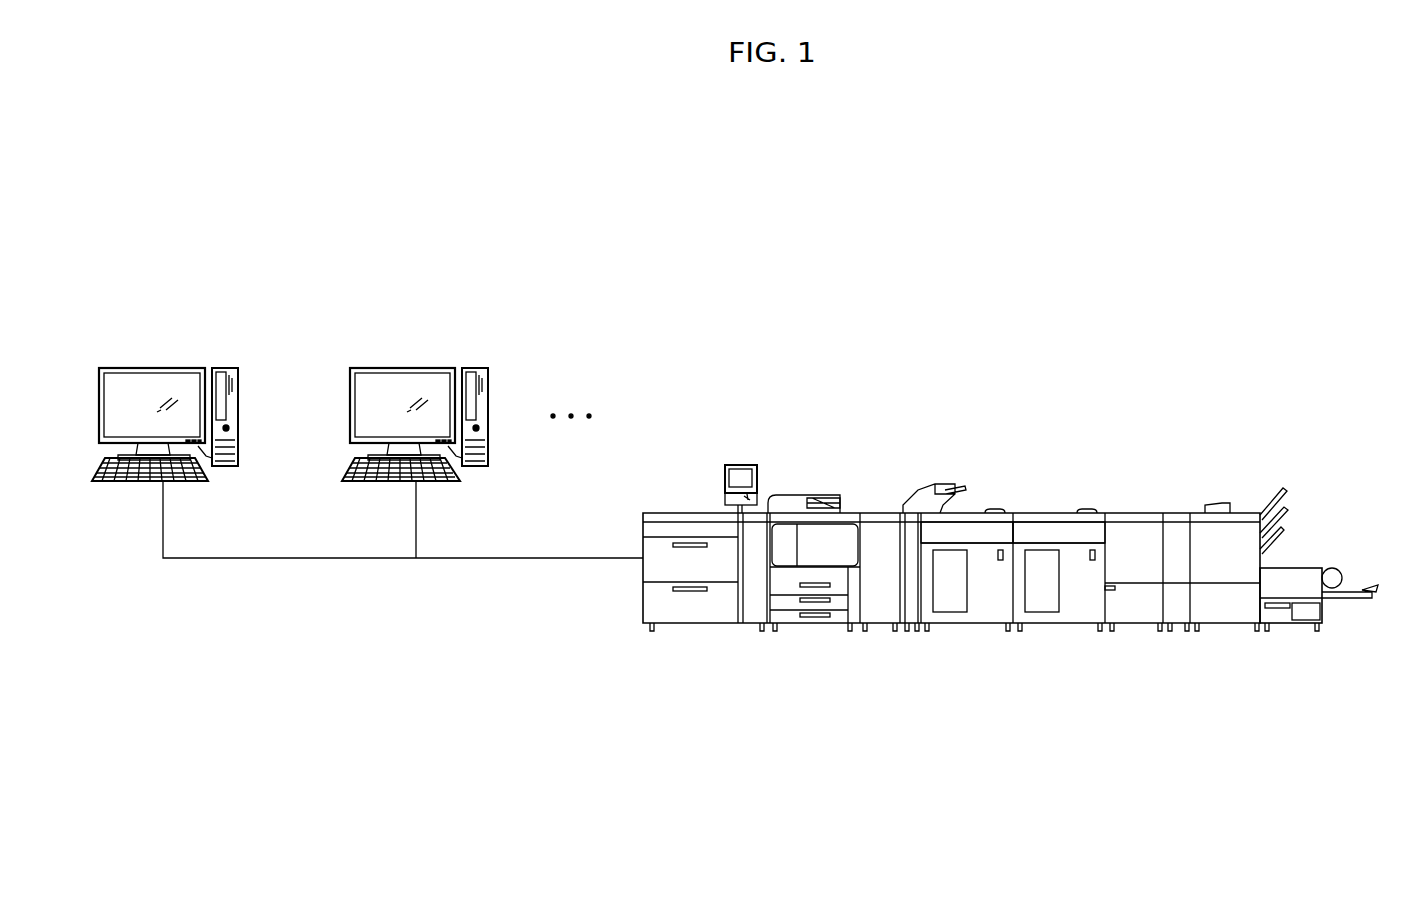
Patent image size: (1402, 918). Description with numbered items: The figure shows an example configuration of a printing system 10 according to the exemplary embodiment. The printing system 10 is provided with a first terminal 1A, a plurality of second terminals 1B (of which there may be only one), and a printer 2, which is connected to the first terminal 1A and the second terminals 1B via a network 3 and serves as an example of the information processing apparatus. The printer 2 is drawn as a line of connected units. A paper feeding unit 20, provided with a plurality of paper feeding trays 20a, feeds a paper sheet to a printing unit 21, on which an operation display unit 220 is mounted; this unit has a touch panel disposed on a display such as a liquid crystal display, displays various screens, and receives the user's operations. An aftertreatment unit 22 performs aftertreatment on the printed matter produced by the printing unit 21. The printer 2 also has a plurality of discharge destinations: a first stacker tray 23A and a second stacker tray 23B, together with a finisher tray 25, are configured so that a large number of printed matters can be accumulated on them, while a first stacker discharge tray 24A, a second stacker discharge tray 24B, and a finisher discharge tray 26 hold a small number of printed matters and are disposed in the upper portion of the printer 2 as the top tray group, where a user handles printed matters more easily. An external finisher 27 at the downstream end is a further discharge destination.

The first terminal 1A is at (222, 368).
The second terminal 1B is at (472, 368).
The network 3 is at (252, 557).
The printing system 10 is at (892, 331).
The printer 2 is at (859, 454).
The paper feeding unit 20 is at (860, 667).
The paper feeding tray 20a is at (663, 603).
The printing unit 21 is at (820, 537).
The operation display unit 220 is at (725, 478).
The first stacker tray 23A is at (985, 612).
The second stacker tray 23B is at (1078, 612).
The first stacker discharge tray 24A is at (963, 530).
The second stacker discharge tray 24B is at (1040, 530).
The aftertreatment unit 22 is at (1322, 635).
The finisher tray 25 is at (1247, 553).
The finisher discharge tray 26 is at (1265, 497).
The external finisher 27 is at (1310, 585).